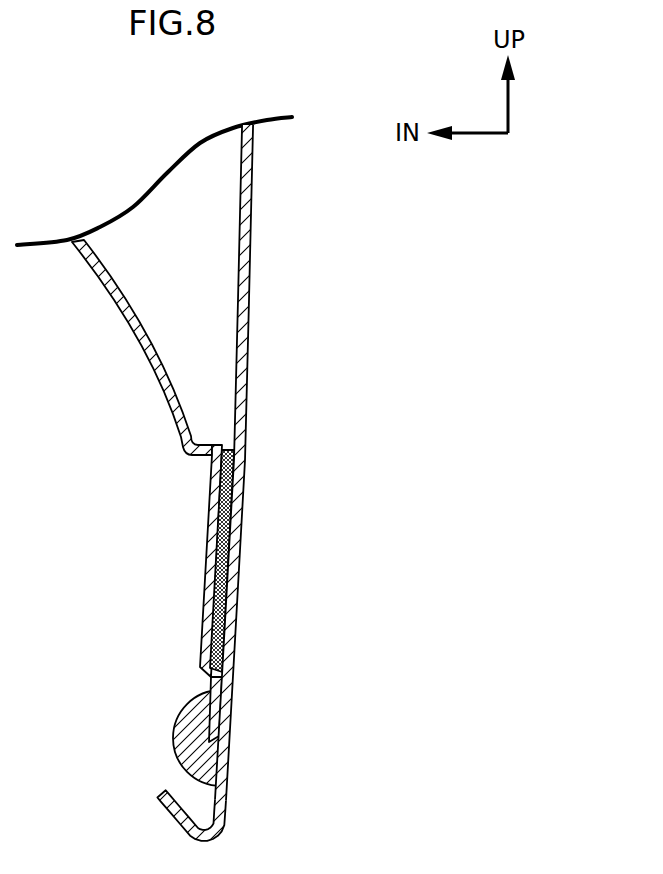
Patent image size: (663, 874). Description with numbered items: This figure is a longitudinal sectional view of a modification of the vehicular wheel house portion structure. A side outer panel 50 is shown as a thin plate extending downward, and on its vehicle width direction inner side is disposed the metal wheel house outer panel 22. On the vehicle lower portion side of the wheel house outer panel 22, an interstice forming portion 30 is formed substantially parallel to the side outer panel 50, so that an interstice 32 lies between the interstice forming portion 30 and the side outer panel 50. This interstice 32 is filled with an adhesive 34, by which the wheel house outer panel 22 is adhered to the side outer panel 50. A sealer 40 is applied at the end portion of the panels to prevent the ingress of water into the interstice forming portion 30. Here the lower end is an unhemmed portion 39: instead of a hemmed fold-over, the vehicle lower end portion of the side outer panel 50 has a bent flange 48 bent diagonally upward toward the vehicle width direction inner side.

The wheel house outer panel 22 is at (154, 397).
The interstice forming portion 30 is at (211, 583).
The interstice 32 is at (236, 545).
The adhesive 34 is at (229, 613).
The unhemmed portion 39 is at (159, 763).
The sealer 40 is at (187, 704).
The bent flange 48 is at (177, 821).
The side outer panel 50 is at (272, 462).